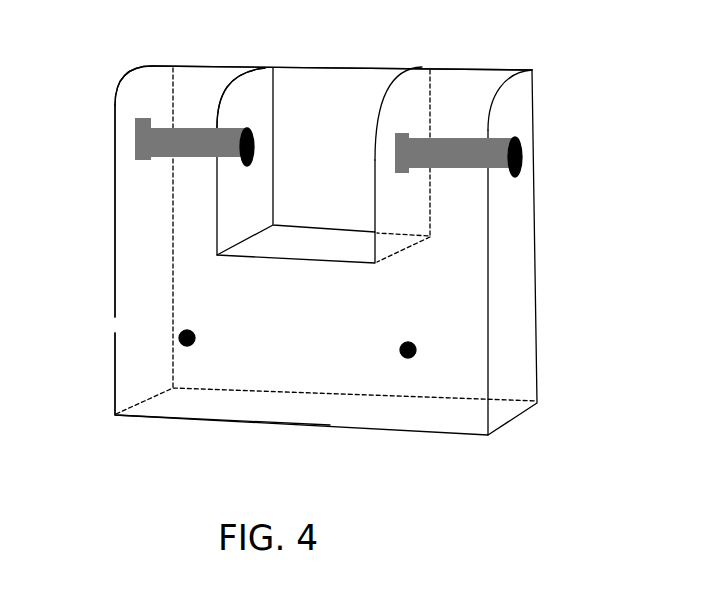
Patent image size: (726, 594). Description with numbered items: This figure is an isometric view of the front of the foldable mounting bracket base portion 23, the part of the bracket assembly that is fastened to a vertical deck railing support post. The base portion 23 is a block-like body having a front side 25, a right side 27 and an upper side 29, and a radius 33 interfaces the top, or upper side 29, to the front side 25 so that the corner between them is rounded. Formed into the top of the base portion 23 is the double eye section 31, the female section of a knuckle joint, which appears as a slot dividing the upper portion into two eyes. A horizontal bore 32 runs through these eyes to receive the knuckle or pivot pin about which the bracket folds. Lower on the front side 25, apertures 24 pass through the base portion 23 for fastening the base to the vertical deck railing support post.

The foldable mounting bracket base portion 23 is at (358, 300).
The aperture 24 is at (187, 350).
The front side 25 is at (233, 302).
The right side 27 is at (515, 338).
The upper side 29 is at (197, 79).
The double eye section 31 is at (325, 203).
The horizontal bore 32 is at (258, 143).
The radius 33 is at (383, 102).